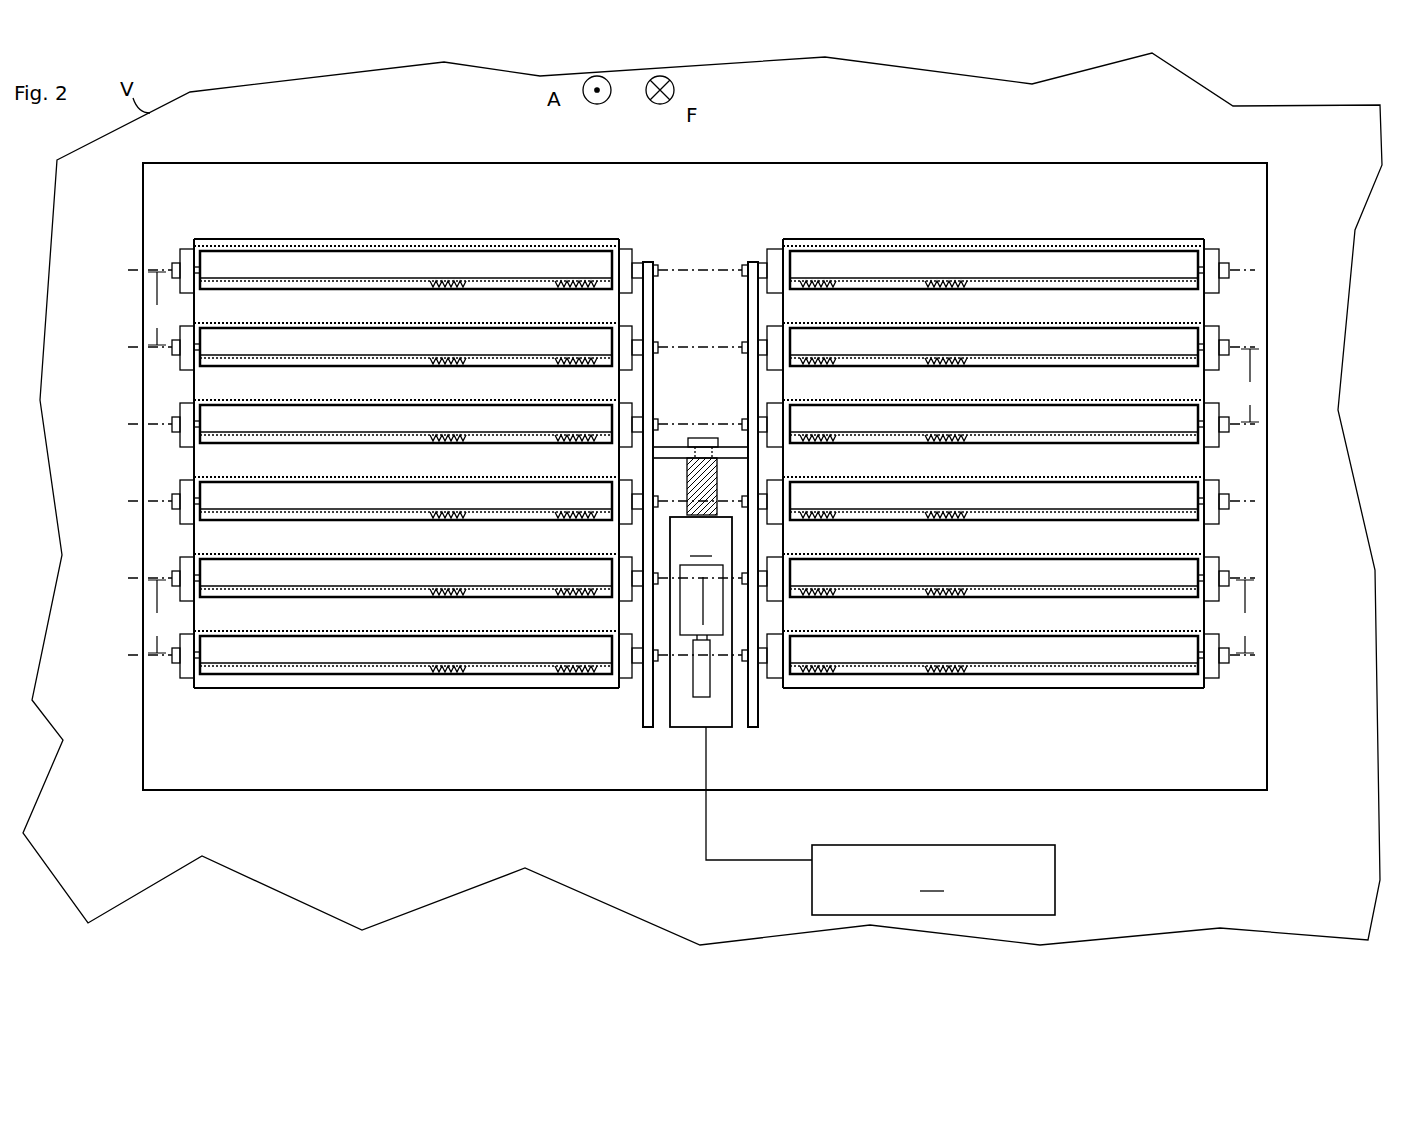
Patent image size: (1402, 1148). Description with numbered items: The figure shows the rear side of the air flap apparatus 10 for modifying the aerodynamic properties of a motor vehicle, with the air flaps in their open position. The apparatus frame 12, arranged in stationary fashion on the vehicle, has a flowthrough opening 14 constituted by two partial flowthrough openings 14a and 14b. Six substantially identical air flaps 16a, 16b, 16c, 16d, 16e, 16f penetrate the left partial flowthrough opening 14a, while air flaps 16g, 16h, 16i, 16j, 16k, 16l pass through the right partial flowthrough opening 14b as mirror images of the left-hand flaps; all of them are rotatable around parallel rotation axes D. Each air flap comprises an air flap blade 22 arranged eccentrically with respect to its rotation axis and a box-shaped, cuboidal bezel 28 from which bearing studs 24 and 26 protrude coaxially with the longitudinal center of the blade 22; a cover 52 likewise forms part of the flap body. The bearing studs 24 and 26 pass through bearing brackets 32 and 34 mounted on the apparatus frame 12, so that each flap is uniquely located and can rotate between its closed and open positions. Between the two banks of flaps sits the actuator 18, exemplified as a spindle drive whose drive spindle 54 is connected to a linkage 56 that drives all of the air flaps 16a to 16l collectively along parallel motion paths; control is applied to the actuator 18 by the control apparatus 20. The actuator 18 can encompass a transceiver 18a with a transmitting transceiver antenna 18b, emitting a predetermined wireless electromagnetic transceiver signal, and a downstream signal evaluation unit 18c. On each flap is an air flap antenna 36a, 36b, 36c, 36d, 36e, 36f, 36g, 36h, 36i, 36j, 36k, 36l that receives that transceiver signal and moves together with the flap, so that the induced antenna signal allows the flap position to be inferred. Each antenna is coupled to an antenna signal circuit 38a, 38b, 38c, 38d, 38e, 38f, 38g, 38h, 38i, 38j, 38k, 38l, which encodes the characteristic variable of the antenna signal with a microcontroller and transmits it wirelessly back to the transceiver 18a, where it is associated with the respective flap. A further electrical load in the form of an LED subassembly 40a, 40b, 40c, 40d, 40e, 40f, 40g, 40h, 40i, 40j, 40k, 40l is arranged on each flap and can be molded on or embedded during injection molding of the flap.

The air flap apparatus 10 is at (453, 142).
The apparatus frame 12 is at (163, 773).
The flowthrough opening 14 is at (598, 188).
The partial flowthrough opening 14a is at (305, 222).
The partial flowthrough opening 14b is at (985, 236).
The air flap 16a is at (406, 251).
The air flap 16b is at (345, 367).
The air flap 16c is at (345, 434).
The air flap 16d is at (345, 511).
The air flap 16e is at (345, 588).
The air flap 16f is at (406, 704).
The air flap 16g is at (1071, 244).
The air flap 16h is at (1074, 357).
The air flap 16i is at (1074, 435).
The air flap 16j is at (1076, 502).
The air flap 16k is at (1071, 574).
The air flap 16l is at (993, 706).
The actuator 18 is at (707, 688).
The transceiver 18a is at (703, 578).
The transmitting transceiver antenna 18b is at (697, 645).
The signal evaluation unit 18c is at (708, 700).
The control apparatus 20 is at (933, 880).
The air flap blade 22 is at (566, 244).
The bearing stud 24 is at (177, 264).
The bearing stud 26 is at (648, 262).
The bezel 28 is at (485, 250).
The bearing bracket 32 is at (188, 366).
The bearing bracket 34 is at (758, 281).
The air flap antenna 36a is at (572, 278).
The air flap antenna 36b is at (572, 355).
The air flap antenna 36c is at (572, 432).
The air flap antenna 36d is at (572, 509).
The air flap antenna 36e is at (572, 586).
The air flap antenna 36f is at (572, 663).
The air flap antenna 36g is at (828, 278).
The air flap antenna 36h is at (832, 357).
The air flap antenna 36i is at (832, 434).
The air flap antenna 36j is at (828, 511).
The air flap antenna 36k is at (832, 588).
The air flap antenna 36l is at (832, 665).
The antenna signal circuit 38a is at (575, 290).
The antenna signal circuit 38b is at (575, 367).
The antenna signal circuit 38c is at (575, 444).
The antenna signal circuit 38d is at (575, 521).
The antenna signal circuit 38e is at (575, 598).
The antenna signal circuit 38f is at (580, 680).
The antenna signal circuit 38g is at (812, 288).
The antenna signal circuit 38h is at (835, 365).
The antenna signal circuit 38i is at (835, 442).
The antenna signal circuit 38j is at (827, 519).
The antenna signal circuit 38k is at (827, 596).
The antenna signal circuit 38l is at (838, 676).
The LED subassembly 40a is at (454, 289).
The LED subassembly 40b is at (454, 366).
The LED subassembly 40c is at (454, 443).
The LED subassembly 40d is at (454, 520).
The LED subassembly 40e is at (454, 597).
The LED subassembly 40f is at (448, 676).
The LED subassembly 40g is at (963, 288).
The LED subassembly 40h is at (963, 365).
The LED subassembly 40i is at (963, 442).
The LED subassembly 40j is at (965, 519).
The LED subassembly 40k is at (947, 589).
The LED subassembly 40l is at (949, 666).
The cover 52 is at (345, 290).
The drive spindle 54 is at (700, 505).
The linkage 56 is at (673, 445).